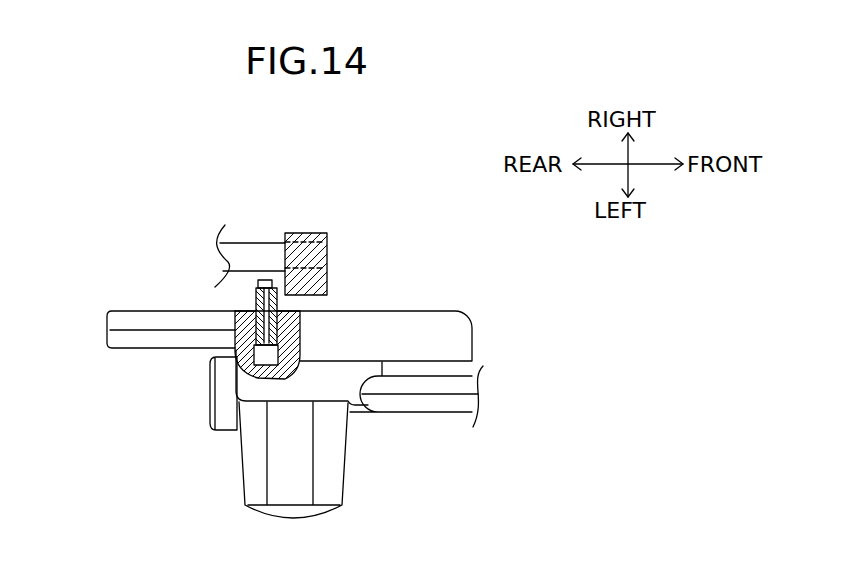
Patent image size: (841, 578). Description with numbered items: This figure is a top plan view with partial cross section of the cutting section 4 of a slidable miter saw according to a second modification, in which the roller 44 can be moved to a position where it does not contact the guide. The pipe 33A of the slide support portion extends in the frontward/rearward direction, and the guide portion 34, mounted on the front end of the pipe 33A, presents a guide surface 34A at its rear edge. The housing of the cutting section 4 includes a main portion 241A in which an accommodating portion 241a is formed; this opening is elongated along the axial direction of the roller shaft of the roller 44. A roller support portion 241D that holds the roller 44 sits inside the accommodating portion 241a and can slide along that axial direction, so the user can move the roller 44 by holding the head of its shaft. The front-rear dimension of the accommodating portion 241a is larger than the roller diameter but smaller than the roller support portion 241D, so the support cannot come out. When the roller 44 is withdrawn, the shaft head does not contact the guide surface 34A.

The cutting section 4 is at (295, 368).
The main portion 241A is at (342, 320).
The roller support portion 241D is at (257, 372).
The accommodating portion 241a is at (272, 359).
The roller 44 is at (266, 260).
The guide surface 34A is at (276, 281).
The pipe 33A is at (234, 276).
The guide portion 34 is at (323, 237).